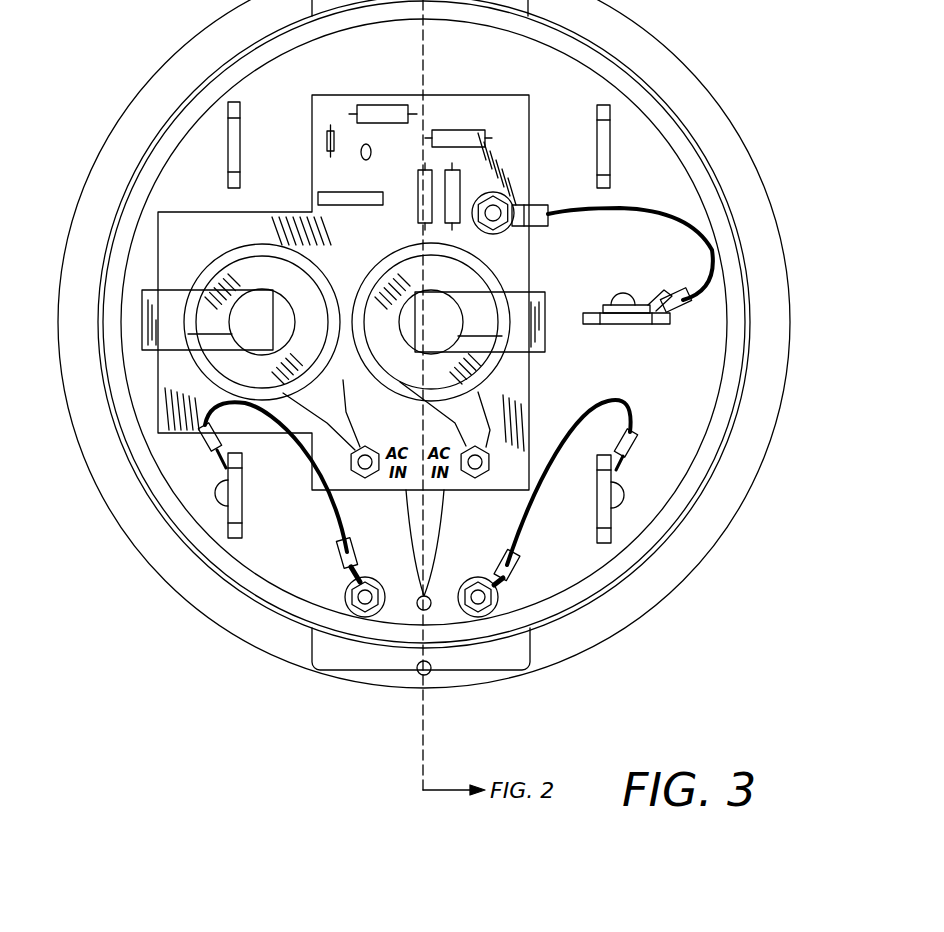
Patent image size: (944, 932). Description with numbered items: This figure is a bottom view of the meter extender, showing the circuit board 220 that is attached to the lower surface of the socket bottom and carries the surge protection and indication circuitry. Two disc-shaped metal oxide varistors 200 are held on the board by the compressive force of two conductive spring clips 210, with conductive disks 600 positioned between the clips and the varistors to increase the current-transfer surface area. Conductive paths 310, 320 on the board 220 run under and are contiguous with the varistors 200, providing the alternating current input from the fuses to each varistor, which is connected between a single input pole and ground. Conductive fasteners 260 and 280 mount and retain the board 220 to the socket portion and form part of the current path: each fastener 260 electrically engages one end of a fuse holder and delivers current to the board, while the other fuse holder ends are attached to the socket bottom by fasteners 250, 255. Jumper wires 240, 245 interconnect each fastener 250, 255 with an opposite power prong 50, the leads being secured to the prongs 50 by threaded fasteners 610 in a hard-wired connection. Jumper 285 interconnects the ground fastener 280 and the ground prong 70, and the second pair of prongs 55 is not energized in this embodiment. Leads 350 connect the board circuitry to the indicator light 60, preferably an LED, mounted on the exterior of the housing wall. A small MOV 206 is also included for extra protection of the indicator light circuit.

The conducting prong 50 is at (228, 527).
The conducting prong 55 is at (597, 130).
The indicator light 60 is at (413, 676).
The ground prong 70 is at (640, 324).
The metal oxide varistor 200 is at (205, 272).
The MOV 206 is at (362, 157).
The conductive spring clip 210 is at (343, 321).
The circuit board 220 is at (158, 238).
The jumper wire 240 is at (333, 514).
The jumper wire 245 is at (523, 557).
The conducting fastener 250 is at (367, 613).
The conducting fastener 255 is at (478, 618).
The conductive fastener 260 is at (366, 479).
The conductive fastener 280 is at (503, 200).
The jumper 285 is at (631, 213).
The conductive path 310 is at (503, 403).
The conductive path 320 is at (308, 405).
The leads 350 is at (441, 526).
The conductive disk 600 is at (283, 322).
The threaded fastener 610 is at (217, 492).